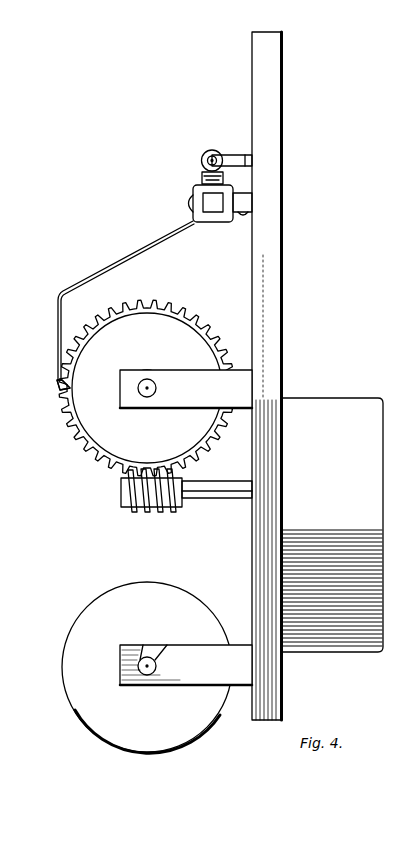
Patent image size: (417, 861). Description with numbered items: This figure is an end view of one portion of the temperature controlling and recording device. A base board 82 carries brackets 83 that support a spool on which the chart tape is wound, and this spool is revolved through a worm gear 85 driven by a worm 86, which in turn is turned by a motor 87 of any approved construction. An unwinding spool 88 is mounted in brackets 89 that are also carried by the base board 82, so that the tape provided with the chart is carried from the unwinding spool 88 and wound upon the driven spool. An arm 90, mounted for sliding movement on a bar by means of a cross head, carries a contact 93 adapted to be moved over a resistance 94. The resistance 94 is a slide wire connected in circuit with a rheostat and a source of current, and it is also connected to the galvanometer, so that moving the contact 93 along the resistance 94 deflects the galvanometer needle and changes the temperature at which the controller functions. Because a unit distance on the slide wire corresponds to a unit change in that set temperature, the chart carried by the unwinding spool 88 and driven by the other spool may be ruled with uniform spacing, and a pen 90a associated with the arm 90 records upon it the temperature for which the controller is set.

The base board 82 is at (270, 238).
The brackets 83 is at (182, 385).
The worm gear 85 is at (110, 447).
The worm 86 is at (152, 510).
The motor 87 is at (328, 408).
The unwinding spool 88 is at (182, 604).
The brackets 89 is at (138, 677).
The arm 90 is at (103, 268).
The pen 90a is at (61, 386).
The contact 93 is at (202, 178).
The resistance 94 is at (204, 156).